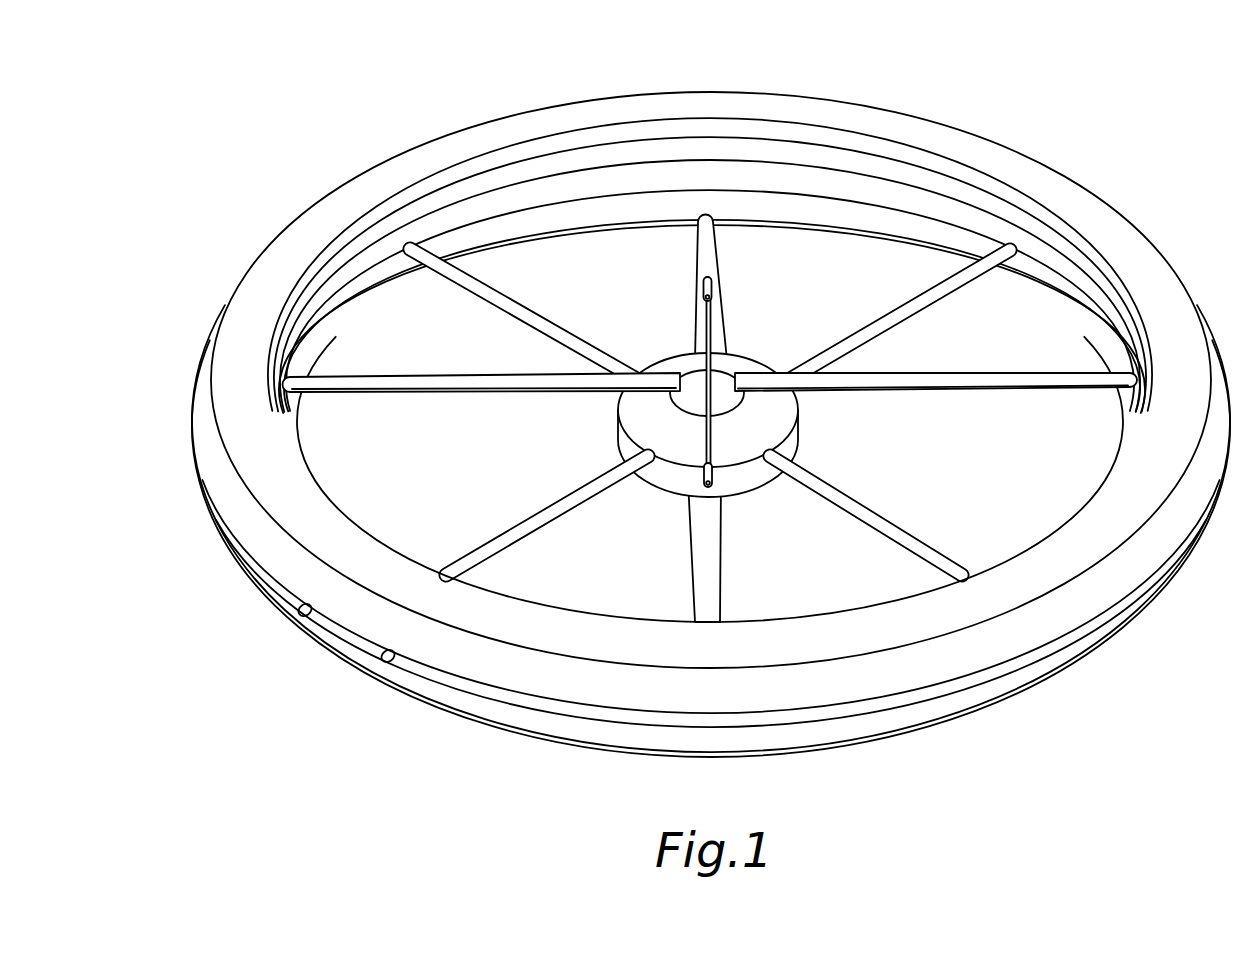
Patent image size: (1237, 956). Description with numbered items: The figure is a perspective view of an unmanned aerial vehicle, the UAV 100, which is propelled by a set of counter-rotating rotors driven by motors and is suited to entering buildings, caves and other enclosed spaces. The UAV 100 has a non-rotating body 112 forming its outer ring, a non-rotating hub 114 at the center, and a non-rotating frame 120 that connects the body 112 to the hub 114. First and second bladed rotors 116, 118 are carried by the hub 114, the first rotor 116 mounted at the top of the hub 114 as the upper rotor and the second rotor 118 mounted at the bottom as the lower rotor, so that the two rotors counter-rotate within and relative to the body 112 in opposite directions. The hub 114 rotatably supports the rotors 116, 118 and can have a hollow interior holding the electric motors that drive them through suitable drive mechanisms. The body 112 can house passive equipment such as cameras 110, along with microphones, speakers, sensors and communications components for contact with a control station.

The UAV 100 is at (266, 116).
The cameras 110 is at (299, 610).
The non-rotating body 112 is at (986, 145).
The non-rotating hub 114 is at (624, 439).
The first bladed rotor 116 is at (440, 382).
The second bladed rotor 118 is at (705, 250).
The non-rotating frame 120 is at (927, 293).